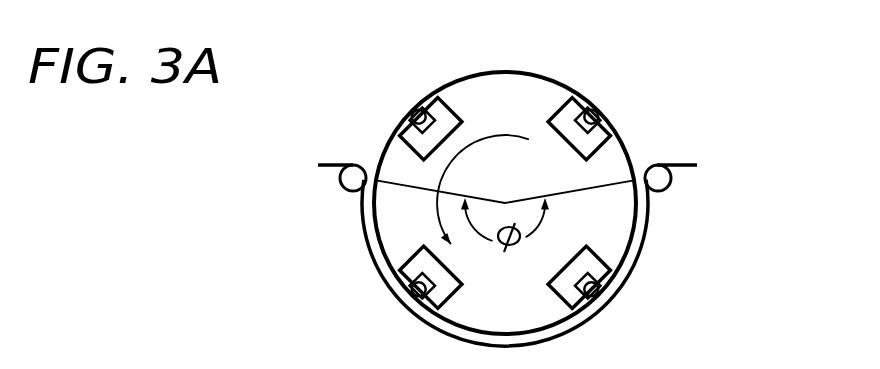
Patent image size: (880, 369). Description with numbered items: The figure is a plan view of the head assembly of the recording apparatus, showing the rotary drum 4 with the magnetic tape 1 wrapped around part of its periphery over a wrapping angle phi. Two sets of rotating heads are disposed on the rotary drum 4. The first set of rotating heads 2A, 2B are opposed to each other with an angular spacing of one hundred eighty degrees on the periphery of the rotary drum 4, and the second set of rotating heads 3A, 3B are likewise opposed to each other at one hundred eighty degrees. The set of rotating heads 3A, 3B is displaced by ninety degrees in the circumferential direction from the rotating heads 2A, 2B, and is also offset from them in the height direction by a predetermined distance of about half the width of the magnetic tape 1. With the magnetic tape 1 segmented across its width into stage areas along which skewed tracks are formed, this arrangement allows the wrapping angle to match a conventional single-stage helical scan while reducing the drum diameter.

The magnetic tape 1 is at (648, 223).
The rotary drum 4 is at (544, 77).
The rotating head 2A is at (417, 294).
The rotating head 2B is at (598, 112).
The rotating head 3A is at (597, 295).
The rotating head 3B is at (417, 111).